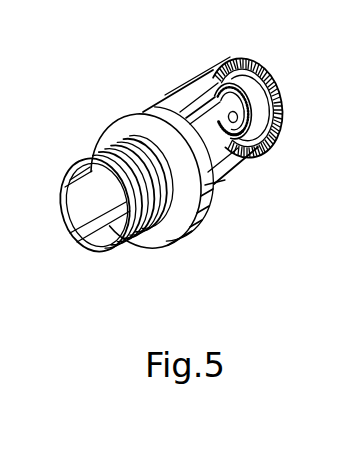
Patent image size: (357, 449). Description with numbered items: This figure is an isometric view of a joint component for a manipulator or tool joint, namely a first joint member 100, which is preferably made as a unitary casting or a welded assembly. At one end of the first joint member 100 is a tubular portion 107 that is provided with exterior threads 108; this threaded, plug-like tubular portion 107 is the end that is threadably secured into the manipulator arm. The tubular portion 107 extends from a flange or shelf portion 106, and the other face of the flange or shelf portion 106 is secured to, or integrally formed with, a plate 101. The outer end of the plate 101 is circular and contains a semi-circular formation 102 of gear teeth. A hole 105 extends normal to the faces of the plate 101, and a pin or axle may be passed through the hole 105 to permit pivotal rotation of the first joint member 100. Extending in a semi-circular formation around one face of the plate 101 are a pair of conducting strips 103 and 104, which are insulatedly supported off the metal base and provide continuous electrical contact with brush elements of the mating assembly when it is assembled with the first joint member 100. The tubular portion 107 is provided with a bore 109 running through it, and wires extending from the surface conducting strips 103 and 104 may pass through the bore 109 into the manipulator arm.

The first joint member 100 is at (267, 52).
The plate 101 is at (224, 186).
The semi-circular formation of gear teeth 102 is at (279, 96).
The conducting strip 103 is at (248, 131).
The conducting strip 104 is at (223, 176).
The hole 105 is at (252, 118).
The flange or shelf portion 106 is at (140, 112).
The tubular portion 107 is at (79, 159).
The exterior threads 108 is at (79, 168).
The bore 109 is at (90, 232).